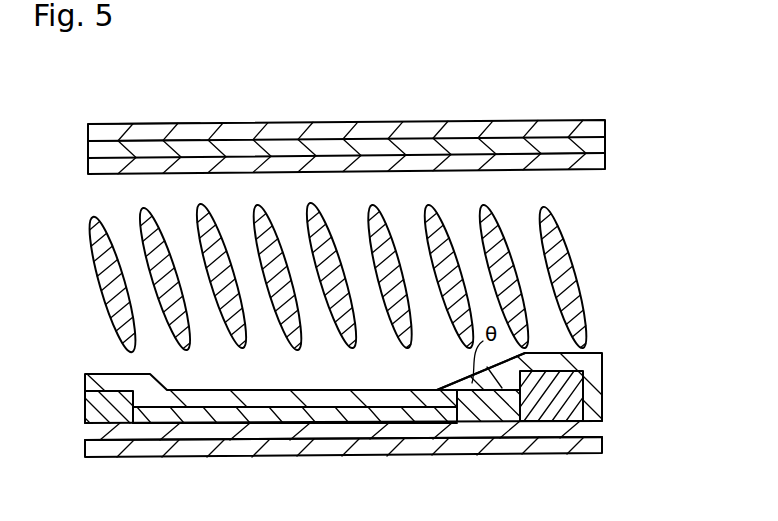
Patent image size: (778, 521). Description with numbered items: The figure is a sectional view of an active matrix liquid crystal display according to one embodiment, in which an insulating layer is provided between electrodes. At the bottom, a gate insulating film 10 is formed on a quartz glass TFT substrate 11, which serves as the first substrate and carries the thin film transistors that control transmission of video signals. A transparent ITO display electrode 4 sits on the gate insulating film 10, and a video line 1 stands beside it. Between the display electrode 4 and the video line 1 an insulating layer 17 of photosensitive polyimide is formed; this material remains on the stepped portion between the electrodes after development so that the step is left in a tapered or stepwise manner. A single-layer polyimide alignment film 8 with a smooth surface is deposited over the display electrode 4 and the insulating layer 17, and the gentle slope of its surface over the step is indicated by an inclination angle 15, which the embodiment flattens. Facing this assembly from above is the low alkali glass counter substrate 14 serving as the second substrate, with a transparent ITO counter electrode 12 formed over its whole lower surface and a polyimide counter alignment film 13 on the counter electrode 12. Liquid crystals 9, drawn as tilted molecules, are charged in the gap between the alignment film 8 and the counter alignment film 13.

The video line 1 is at (583, 398).
The display electrode 4 is at (190, 418).
The alignment film 8 is at (103, 373).
The liquid crystals 9 is at (565, 230).
The gate insulating film 10 is at (282, 432).
The TFT substrate 11 is at (400, 448).
The counter electrode 12 is at (337, 138).
The counter alignment film 13 is at (603, 155).
The counter substrate 14 is at (105, 132).
The inclination angle 15 is at (473, 380).
The insulating layer 17 is at (85, 400).